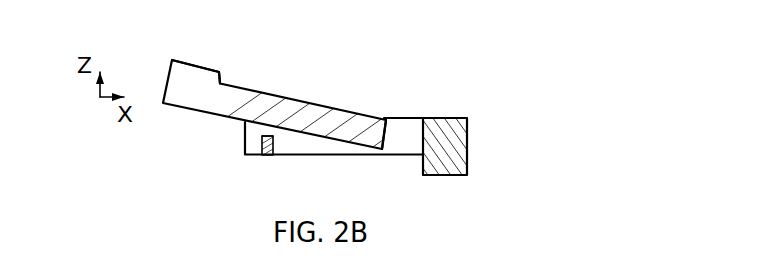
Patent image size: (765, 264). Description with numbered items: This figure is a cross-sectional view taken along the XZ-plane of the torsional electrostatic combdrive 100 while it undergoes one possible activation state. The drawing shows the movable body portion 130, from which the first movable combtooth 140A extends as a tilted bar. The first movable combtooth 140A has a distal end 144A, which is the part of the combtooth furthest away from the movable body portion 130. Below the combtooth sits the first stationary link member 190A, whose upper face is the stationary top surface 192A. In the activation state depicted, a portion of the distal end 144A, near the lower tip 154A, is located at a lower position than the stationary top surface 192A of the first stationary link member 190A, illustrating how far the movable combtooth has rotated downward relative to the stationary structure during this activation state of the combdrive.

The torsional electrostatic combdrive 100 is at (561, 71).
The movable body portion 130 is at (188, 80).
The first movable combtooth 140A is at (311, 99).
The distal end 144A is at (388, 147).
The lower tip 154A is at (392, 142).
The first stationary link member 190A is at (253, 142).
The stationary top surface 192A is at (268, 136).